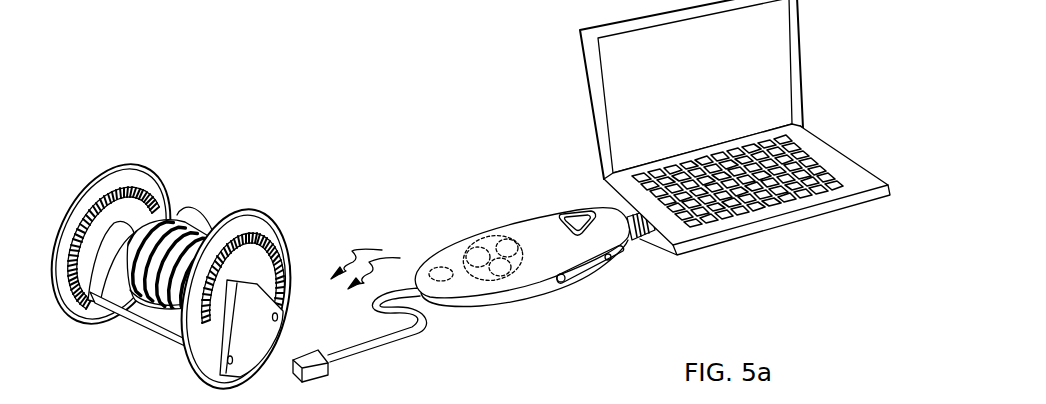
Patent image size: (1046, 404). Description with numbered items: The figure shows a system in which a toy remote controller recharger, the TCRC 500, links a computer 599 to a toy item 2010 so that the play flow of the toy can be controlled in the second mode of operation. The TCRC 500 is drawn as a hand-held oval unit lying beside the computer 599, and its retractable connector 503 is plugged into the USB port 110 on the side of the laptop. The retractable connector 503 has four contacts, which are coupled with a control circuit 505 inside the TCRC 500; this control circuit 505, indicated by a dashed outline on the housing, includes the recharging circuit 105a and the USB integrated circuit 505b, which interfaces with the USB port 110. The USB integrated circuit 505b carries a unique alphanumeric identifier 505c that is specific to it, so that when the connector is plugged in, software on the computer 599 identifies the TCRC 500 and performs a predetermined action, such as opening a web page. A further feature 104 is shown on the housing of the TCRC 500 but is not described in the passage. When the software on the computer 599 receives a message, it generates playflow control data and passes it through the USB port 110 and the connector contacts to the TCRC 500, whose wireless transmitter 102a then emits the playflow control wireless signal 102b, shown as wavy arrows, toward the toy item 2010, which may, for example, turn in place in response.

The toy item 2010 is at (178, 341).
The wireless transmitter 102a is at (436, 269).
The playflow control wireless signal 102b is at (357, 246).
The toy remote controller recharger (TCRC) 500 is at (548, 213).
The control circuit 505 is at (490, 236).
The USB integrated circuit 505b is at (499, 271).
The unique alphanumeric identifier 505c is at (509, 240).
The recharging circuit 105a is at (480, 259).
The power button 104 is at (578, 212).
The retractable connector 503 is at (632, 238).
The USB port 110 is at (652, 233).
The computer 599 is at (777, 229).